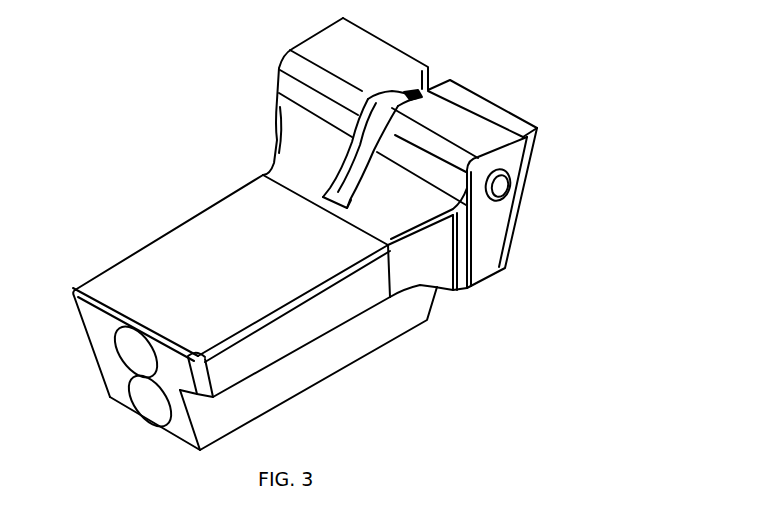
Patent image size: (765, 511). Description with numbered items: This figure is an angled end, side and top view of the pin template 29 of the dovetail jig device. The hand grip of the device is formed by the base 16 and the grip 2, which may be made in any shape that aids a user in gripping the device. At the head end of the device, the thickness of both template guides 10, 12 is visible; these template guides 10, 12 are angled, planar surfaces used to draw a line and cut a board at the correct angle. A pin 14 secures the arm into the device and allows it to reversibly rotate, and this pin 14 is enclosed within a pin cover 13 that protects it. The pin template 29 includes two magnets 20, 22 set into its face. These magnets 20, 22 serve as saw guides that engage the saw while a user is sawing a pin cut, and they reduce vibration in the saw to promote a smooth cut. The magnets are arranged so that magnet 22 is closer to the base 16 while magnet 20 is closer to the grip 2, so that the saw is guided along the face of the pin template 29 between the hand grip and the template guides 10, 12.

The grip 2 is at (270, 286).
The template guide 10 is at (373, 32).
The template guide 12 is at (538, 141).
The pin cover 13 is at (413, 96).
The pin 14 is at (504, 191).
The base 16 is at (323, 367).
The magnet 20 is at (135, 352).
The magnet 22 is at (149, 401).
The pin template 29 is at (97, 335).